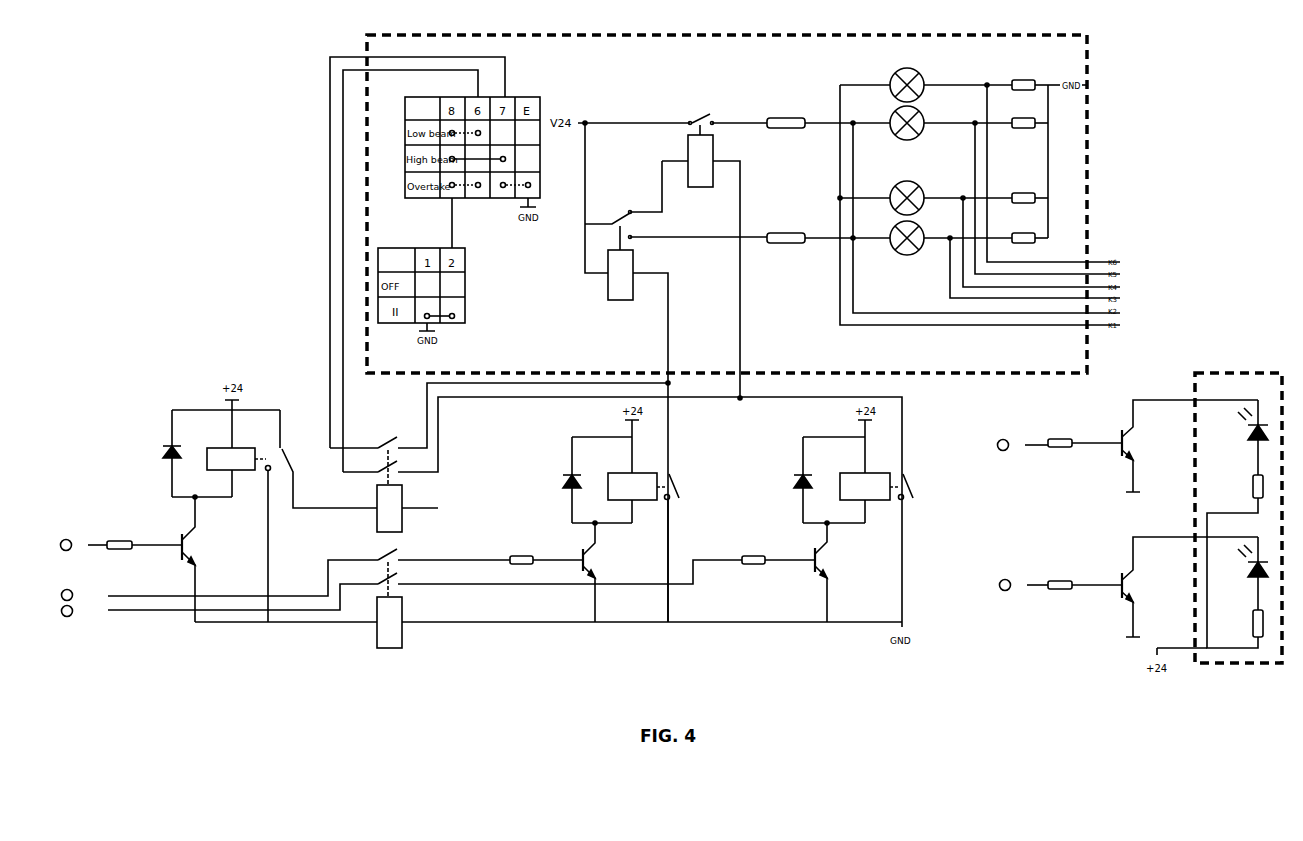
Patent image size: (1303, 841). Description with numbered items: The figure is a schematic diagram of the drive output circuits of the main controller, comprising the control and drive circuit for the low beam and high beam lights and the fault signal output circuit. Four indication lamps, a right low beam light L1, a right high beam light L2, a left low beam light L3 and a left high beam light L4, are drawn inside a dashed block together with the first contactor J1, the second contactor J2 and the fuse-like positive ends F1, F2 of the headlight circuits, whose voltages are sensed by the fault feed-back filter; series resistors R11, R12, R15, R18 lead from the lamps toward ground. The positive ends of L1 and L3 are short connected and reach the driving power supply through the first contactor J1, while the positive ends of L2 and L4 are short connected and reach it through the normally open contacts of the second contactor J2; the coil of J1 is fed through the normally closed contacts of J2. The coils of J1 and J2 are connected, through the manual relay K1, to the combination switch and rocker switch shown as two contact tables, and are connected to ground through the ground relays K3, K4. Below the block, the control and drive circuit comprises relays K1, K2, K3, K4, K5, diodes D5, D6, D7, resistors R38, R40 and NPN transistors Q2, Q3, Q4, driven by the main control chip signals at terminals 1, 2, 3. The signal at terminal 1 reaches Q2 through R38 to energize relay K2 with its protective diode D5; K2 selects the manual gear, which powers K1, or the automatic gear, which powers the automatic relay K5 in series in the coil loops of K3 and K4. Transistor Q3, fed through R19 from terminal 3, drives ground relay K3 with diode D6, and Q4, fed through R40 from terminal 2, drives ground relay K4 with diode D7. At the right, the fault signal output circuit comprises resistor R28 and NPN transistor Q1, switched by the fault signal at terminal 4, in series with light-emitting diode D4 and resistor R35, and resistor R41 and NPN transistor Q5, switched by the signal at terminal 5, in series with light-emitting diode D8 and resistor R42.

The first contactor J1 is at (698, 248).
The second contactor J2 is at (676, 247).
The positive end of the high beam lights F1 is at (828, 114).
The positive end of the low beam lights F2 is at (828, 229).
The right low beam light L1 is at (926, 77).
The right high beam light L2 is at (951, 133).
The left low beam light L3 is at (926, 189).
The left high beam light L4 is at (951, 247).
The resistor R11 is at (1036, 79).
The resistor R12 is at (1030, 117).
The resistor R15 is at (1030, 192).
The resistor R18 is at (1030, 232).
The diode D5 is at (180, 454).
The relay K2 is at (292, 516).
The NPN transistor Q2 is at (176, 559).
The resistor R38 is at (110, 538).
The output signal O1 1 is at (74, 546).
The output signal O2 2 is at (220, 582).
The output signal O3 3 is at (220, 602).
The fault signal O4 4 is at (1023, 446).
The fault signal O5 5 is at (1024, 586).
The manual relay K1 is at (616, 504).
The automatic relay K5 is at (559, 591).
The diode D6 is at (580, 483).
The ground relay K3 is at (654, 547).
The NPN transistor Q3 is at (578, 572).
The resistor R19 is at (521, 560).
The diode D7 is at (811, 483).
The ground relay K4 is at (885, 486).
The NPN transistor Q4 is at (811, 572).
The resistor R40 is at (753, 560).
The resistor R28 is at (1085, 443).
The NPN transistor Q1 is at (1190, 452).
The light-emitting diode D4 is at (1258, 437).
The resistor R35 is at (1243, 554).
The resistor R41 is at (1085, 585).
The NPN transistor Q5 is at (1189, 593).
The light-emitting diode D8 is at (1258, 573).
The resistor R42 is at (1266, 619).